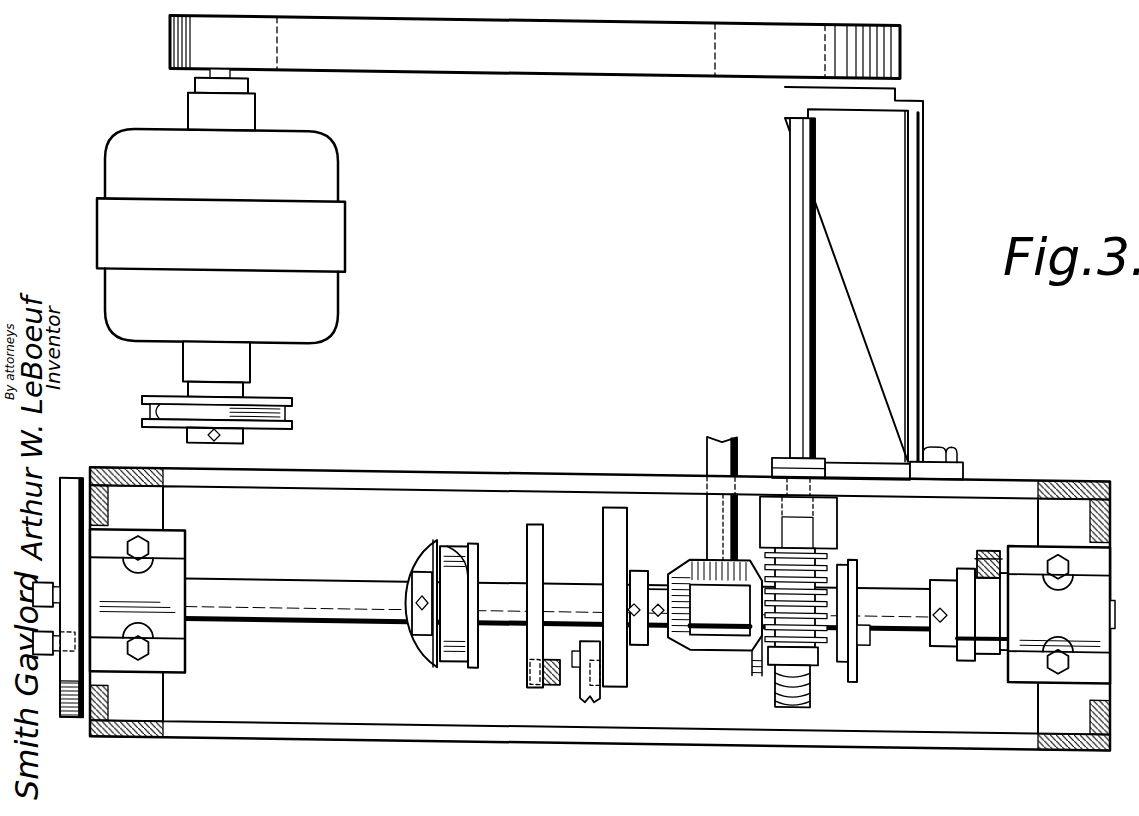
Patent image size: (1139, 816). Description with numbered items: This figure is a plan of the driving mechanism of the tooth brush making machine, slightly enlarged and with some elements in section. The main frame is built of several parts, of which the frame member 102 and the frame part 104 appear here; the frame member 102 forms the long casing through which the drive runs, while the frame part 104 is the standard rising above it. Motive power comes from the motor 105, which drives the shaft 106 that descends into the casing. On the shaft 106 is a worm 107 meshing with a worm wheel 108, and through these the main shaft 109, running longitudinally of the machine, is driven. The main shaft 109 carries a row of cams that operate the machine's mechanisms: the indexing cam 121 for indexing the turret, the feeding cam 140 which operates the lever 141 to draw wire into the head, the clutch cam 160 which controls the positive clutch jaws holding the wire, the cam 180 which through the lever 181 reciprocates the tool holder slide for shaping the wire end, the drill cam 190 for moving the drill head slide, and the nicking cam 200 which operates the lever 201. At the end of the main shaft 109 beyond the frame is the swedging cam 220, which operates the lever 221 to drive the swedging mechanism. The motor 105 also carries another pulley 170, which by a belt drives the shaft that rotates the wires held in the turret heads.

The frame member 102 is at (1042, 474).
The frame part 104 is at (965, 166).
The motor 105 is at (250, 256).
The shaft 106 is at (815, 152).
The worm 107 is at (820, 570).
The worm wheel 108 is at (800, 692).
The main shaft 109 is at (918, 582).
The indexing cam 121 is at (857, 654).
The feeding cam 140 is at (968, 646).
The lever 141 is at (980, 552).
The clutch cam 160 is at (730, 680).
The pulley 170 is at (157, 412).
The cam 180 is at (543, 565).
The lever 181 is at (555, 646).
The drill cam 190 is at (436, 665).
The nicking cam 200 is at (627, 667).
The lever 201 is at (586, 699).
The swedging cam 220 is at (65, 529).
The lever 221 is at (56, 672).